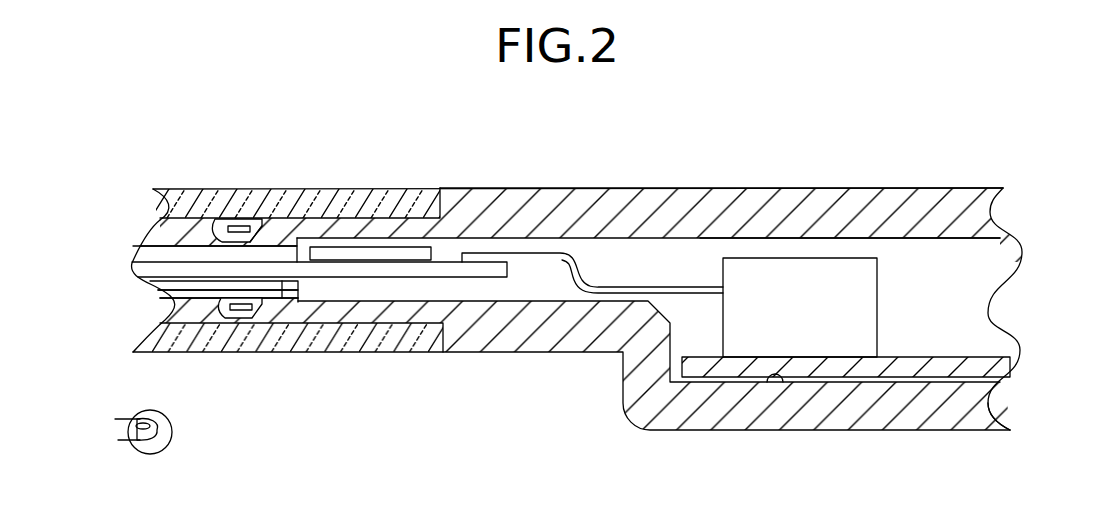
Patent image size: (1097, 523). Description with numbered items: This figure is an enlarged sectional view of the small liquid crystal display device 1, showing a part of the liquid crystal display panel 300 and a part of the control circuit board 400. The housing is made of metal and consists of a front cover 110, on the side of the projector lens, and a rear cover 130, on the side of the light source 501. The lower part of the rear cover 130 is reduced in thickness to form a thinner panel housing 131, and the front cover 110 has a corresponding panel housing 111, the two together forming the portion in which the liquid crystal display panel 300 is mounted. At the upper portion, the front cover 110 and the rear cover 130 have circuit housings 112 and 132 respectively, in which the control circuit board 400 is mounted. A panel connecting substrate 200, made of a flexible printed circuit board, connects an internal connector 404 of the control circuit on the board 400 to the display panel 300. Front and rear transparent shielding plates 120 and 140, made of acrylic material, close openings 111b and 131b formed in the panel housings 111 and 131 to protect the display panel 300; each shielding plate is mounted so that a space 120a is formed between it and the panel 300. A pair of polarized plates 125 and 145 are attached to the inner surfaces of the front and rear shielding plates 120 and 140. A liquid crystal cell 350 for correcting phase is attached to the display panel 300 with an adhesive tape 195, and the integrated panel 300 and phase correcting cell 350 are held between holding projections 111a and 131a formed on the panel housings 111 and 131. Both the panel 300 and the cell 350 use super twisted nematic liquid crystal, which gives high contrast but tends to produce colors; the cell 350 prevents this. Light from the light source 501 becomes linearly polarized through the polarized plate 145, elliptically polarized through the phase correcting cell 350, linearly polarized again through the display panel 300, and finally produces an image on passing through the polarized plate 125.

The liquid crystal display device 1 is at (654, 186).
The front cover 110 is at (963, 200).
The panel housing 111 is at (263, 230).
The holding projection 111a is at (257, 243).
The opening 111b is at (215, 233).
The circuit housing 112 is at (838, 252).
The front transparent shielding plate 120 is at (370, 198).
The space 120a is at (163, 188).
The polarized plate 125 is at (153, 240).
The rear cover 130 is at (935, 410).
The panel housing 131 is at (275, 300).
The holding projection 131a is at (281, 298).
The opening 131b is at (222, 320).
The circuit housing 132 is at (785, 384).
The rear transparent shielding plate 140 is at (343, 350).
The polarized plate 145 is at (177, 303).
The adhesive tape 195 is at (284, 284).
The panel connecting substrate 200 is at (555, 252).
The liquid crystal display panel 300 is at (192, 243).
The liquid crystal cell for correcting phase 350 is at (218, 308).
The control circuit board 400 is at (1021, 357).
The internal connector 404 is at (767, 272).
The light source 501 is at (158, 454).